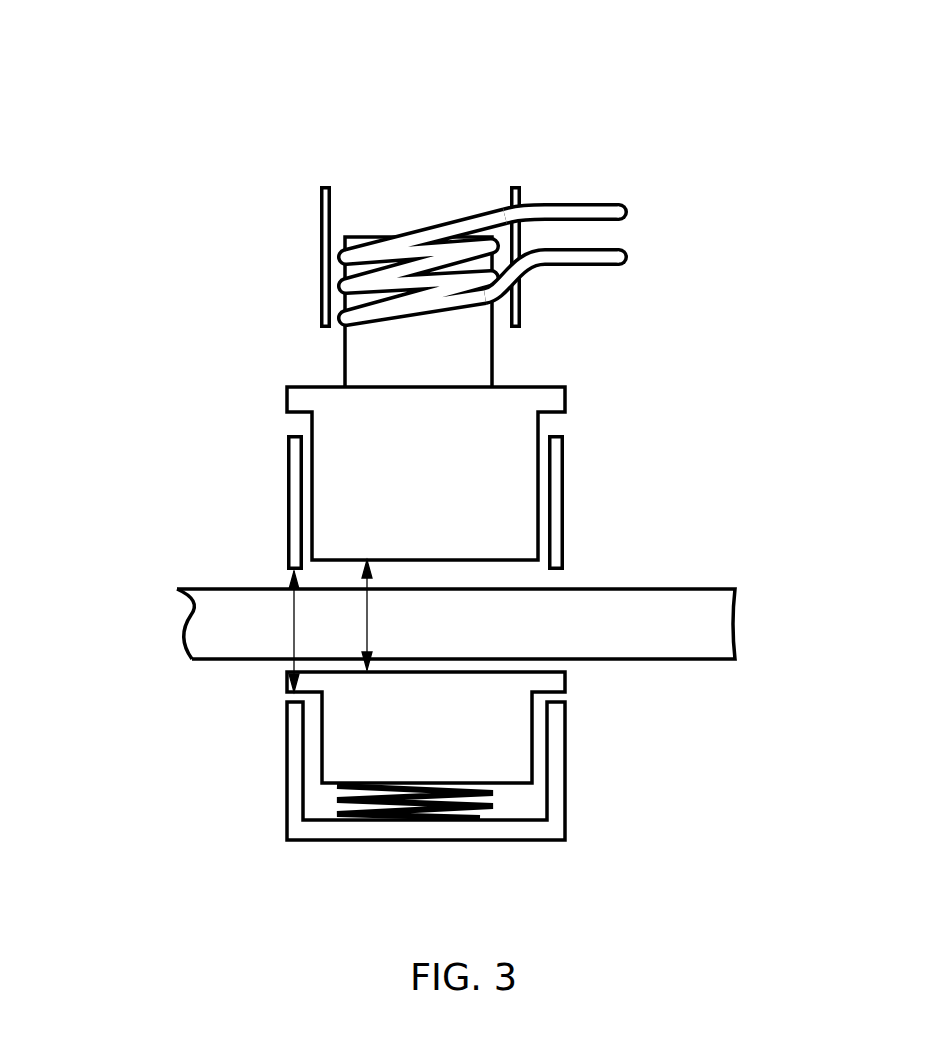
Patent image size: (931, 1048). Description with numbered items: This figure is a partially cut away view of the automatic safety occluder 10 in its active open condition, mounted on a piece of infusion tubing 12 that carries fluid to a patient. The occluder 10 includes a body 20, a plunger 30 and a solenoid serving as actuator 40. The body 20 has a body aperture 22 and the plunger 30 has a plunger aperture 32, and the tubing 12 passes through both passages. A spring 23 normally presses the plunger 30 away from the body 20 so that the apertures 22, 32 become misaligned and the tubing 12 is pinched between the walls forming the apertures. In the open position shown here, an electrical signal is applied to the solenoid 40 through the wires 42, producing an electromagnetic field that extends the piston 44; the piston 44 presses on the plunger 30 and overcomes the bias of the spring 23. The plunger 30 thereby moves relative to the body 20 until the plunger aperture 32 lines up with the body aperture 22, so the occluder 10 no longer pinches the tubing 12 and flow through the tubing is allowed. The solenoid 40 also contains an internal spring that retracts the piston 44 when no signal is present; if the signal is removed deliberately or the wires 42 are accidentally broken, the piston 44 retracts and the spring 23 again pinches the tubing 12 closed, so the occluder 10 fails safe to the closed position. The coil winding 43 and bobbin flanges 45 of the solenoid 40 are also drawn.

The occluder 10 is at (664, 130).
The tubing 12 is at (208, 614).
The body 20 is at (551, 507).
The body aperture 22 is at (293, 647).
The spring 23 is at (497, 803).
The plunger 30 is at (523, 432).
The plunger aperture 32 is at (365, 613).
The solenoid 40 is at (295, 374).
The wires 42 is at (630, 212).
The coil winding 43 is at (417, 268).
The piston 44 is at (465, 352).
The bobbin flange 45 is at (515, 310).